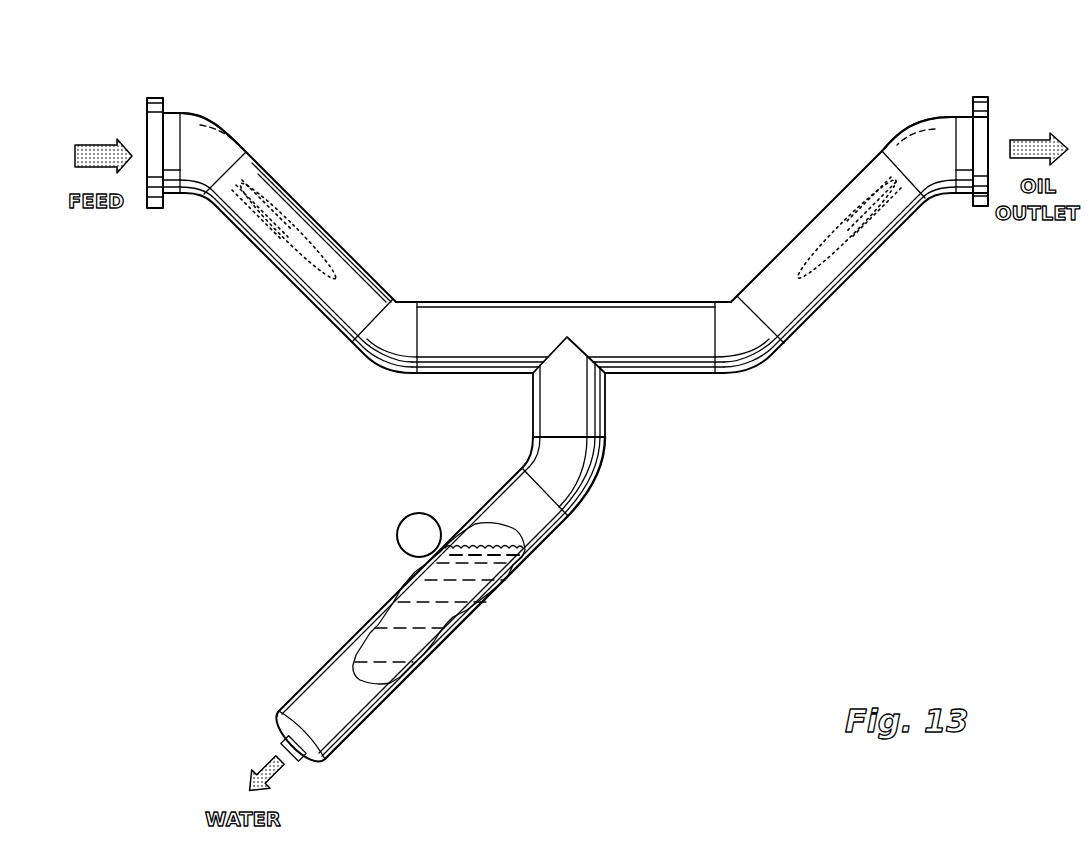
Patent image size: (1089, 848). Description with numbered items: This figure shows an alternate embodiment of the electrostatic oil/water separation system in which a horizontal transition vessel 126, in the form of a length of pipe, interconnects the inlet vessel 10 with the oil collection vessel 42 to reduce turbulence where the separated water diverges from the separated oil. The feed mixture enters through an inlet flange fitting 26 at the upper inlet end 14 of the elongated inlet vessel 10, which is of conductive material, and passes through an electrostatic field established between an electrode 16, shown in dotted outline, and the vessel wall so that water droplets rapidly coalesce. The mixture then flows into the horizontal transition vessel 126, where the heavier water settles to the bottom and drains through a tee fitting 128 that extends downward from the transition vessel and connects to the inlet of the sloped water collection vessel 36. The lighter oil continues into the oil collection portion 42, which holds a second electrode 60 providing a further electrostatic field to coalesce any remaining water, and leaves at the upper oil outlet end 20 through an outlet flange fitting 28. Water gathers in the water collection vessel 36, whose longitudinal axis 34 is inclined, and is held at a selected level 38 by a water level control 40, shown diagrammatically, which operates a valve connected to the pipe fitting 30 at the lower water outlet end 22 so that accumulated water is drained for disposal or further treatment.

The inlet vessel 10 is at (318, 295).
The upper inlet end 14 is at (219, 163).
The electrode 16 is at (295, 234).
The upper oil outlet end 20 is at (904, 166).
The lower water outlet end 22 is at (312, 758).
The inlet flange fitting 26 is at (150, 101).
The outlet flange fitting 28 is at (987, 100).
The pipe fitting 30 is at (281, 742).
The longitudinal axis of separation vessel 34 is at (400, 648).
The water collection portion 36 is at (497, 593).
The water level 38 is at (497, 539).
The water level control 40 is at (397, 540).
The oil collection portion 42 is at (813, 318).
The second electrode 60 is at (840, 228).
The horizontal transition vessel 126 is at (551, 317).
The tee fitting 128 is at (590, 402).